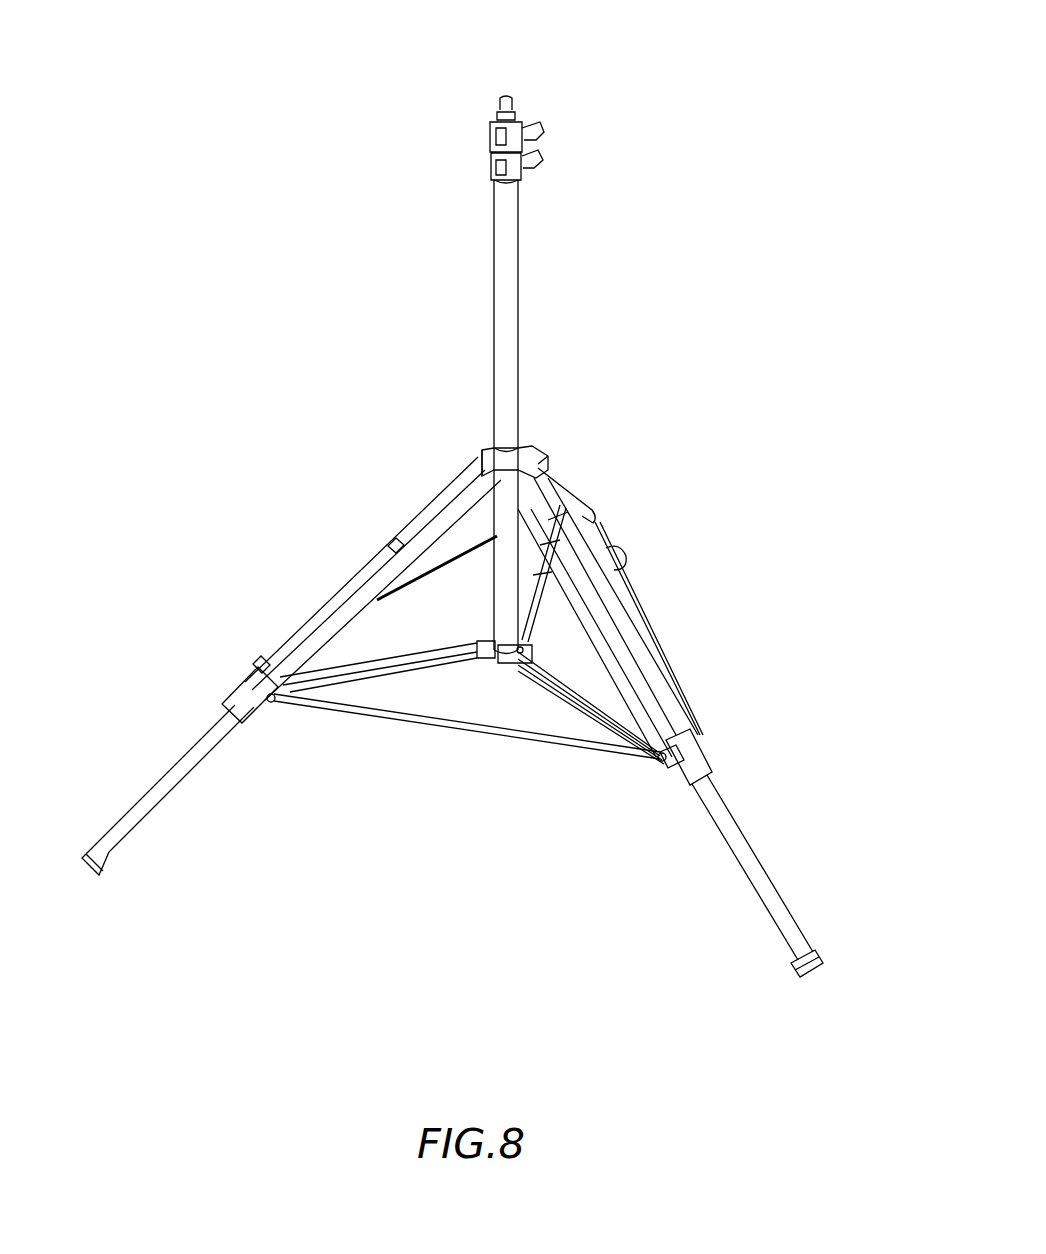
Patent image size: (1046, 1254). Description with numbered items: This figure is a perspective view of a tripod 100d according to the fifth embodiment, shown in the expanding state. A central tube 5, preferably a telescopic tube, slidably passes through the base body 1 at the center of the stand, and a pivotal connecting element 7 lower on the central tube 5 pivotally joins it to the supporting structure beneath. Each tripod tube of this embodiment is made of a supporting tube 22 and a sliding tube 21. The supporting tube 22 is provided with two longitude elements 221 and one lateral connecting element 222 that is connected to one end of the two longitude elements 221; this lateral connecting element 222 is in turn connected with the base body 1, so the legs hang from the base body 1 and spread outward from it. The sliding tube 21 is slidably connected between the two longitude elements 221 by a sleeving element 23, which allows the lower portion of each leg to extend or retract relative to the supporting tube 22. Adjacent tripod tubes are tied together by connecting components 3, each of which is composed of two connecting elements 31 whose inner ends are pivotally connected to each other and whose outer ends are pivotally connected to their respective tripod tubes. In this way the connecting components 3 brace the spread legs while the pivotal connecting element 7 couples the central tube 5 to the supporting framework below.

The tripod 100d is at (691, 99).
The central tube 5 is at (500, 300).
The base body 1 is at (488, 458).
The supporting tube 22 is at (796, 530).
The longitude elements 221 is at (642, 650).
The lateral connecting element 222 is at (565, 470).
The sleeving element 23 is at (703, 770).
The sliding tube 21 is at (740, 843).
The connecting components 3 is at (508, 812).
The connecting elements 31 is at (410, 718).
The pivotal connecting element 7 is at (512, 664).